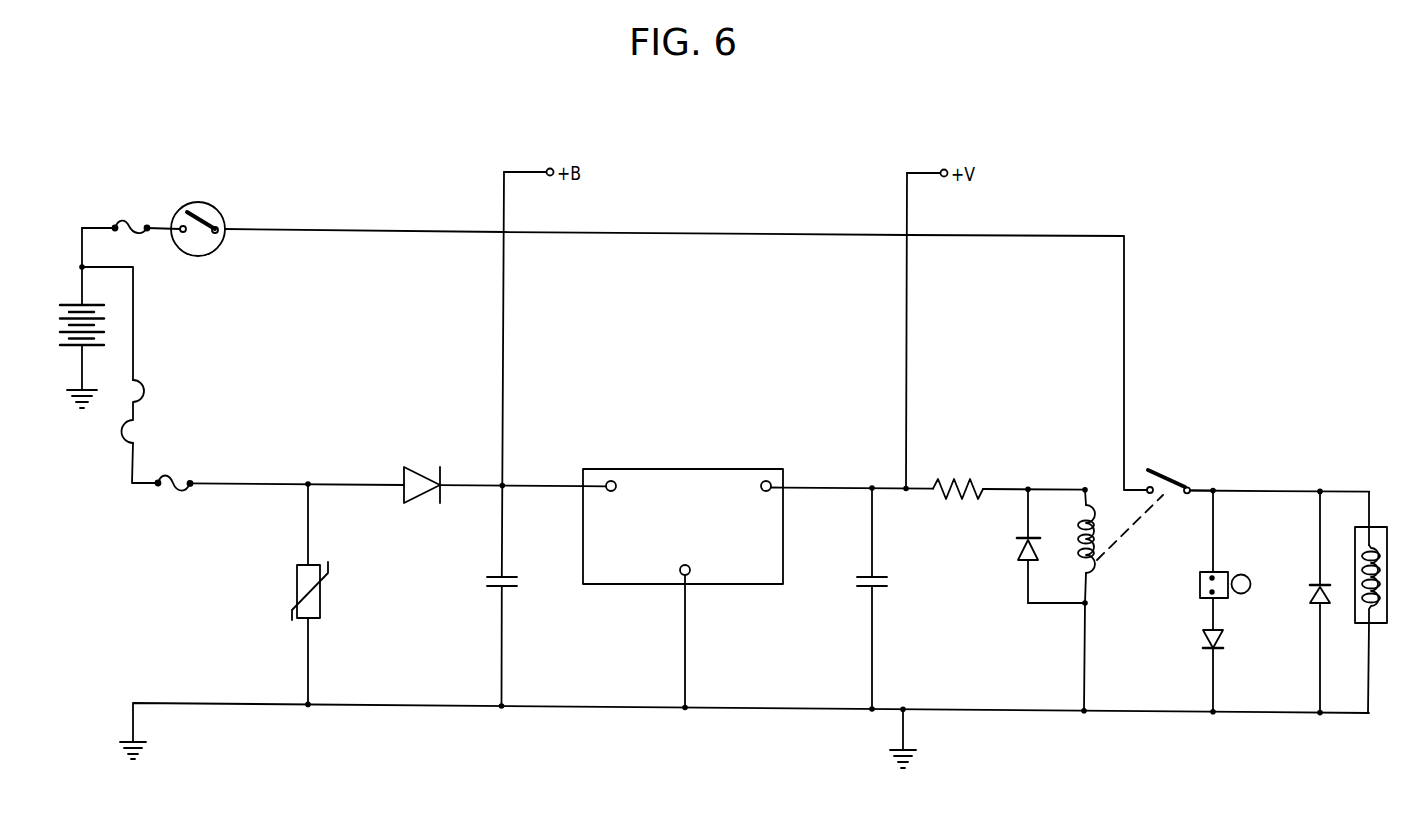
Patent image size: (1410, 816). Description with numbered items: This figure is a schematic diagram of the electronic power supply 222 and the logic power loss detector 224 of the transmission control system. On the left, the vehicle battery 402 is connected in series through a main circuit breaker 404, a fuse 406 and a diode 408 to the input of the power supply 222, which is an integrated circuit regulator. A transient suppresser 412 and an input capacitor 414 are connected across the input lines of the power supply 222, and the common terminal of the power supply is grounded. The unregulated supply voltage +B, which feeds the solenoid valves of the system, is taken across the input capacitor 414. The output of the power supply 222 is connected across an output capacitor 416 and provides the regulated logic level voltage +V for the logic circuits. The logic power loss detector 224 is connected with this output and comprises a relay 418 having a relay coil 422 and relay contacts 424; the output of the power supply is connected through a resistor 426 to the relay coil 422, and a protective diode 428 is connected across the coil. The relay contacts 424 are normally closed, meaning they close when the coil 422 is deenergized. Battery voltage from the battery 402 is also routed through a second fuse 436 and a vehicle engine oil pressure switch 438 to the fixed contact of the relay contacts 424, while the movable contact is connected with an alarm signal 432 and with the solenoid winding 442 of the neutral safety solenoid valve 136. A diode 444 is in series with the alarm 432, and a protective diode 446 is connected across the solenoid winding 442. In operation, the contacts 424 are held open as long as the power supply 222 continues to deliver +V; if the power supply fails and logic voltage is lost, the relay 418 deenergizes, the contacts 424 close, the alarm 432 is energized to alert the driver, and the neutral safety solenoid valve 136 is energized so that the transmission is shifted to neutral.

The neutral safety solenoid valve 136 is at (1375, 527).
The power supply 222 is at (676, 469).
The logic power loss detector 224 is at (982, 452).
The vehicle battery 402 is at (68, 304).
The main circuit breaker 404 is at (138, 428).
The fuse 406 is at (168, 478).
The diode 408 is at (437, 468).
The transient suppresser 412 is at (300, 578).
The capacitor 414 is at (495, 575).
The output capacitor 416 is at (863, 575).
The relay 418 is at (1141, 534).
The relay coil 422 is at (1078, 547).
The relay contacts 424 is at (1160, 471).
The resistor 426 is at (953, 500).
The protective diode 428 is at (1021, 553).
The alarm signal 432 is at (1224, 574).
The fuse 436 is at (126, 222).
The vehicle engine oil pressure switch 438 is at (222, 213).
The solenoid winding 442 is at (1362, 605).
The diode 444 is at (1201, 638).
The protective diode 446 is at (1312, 593).